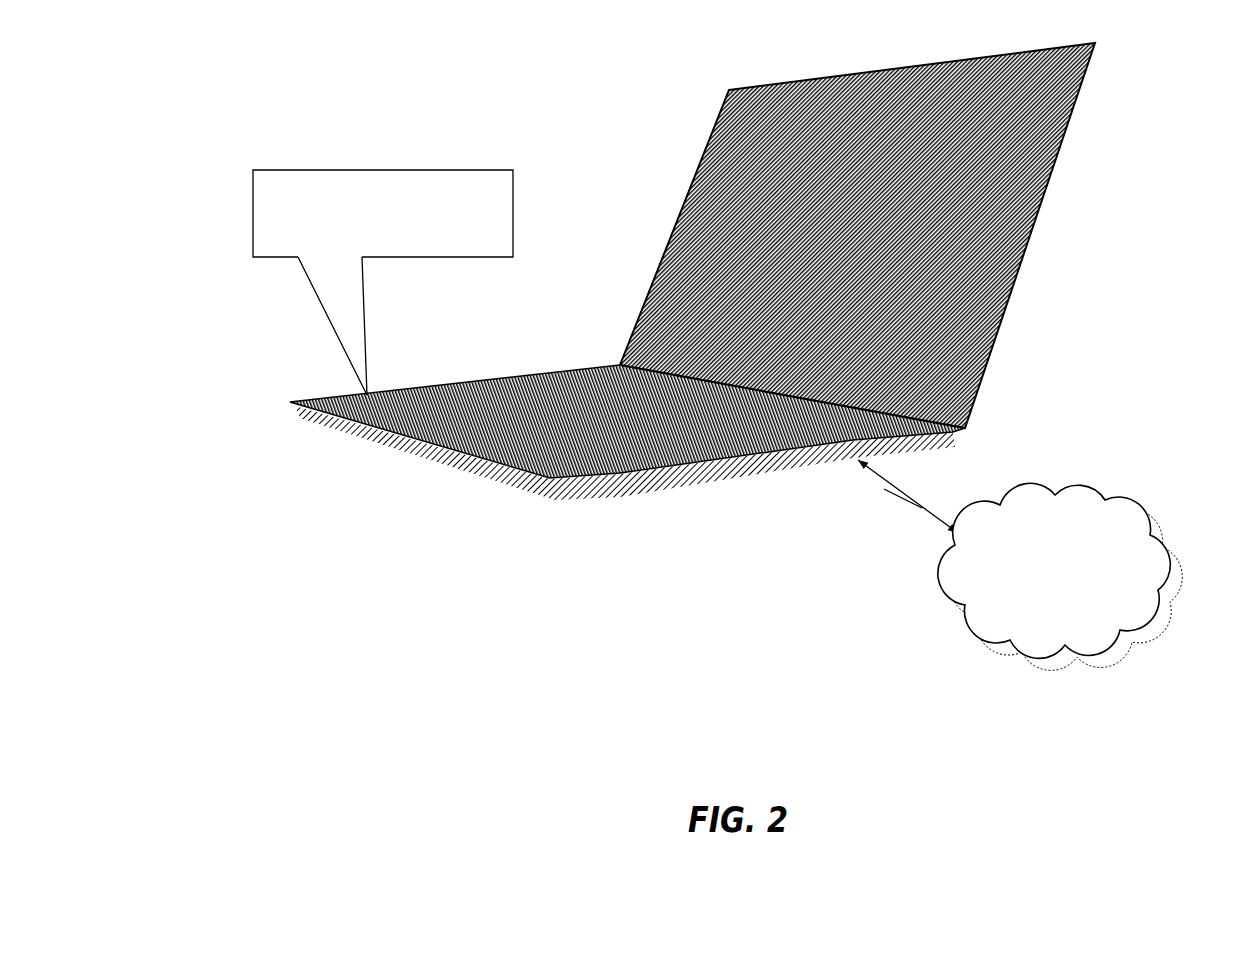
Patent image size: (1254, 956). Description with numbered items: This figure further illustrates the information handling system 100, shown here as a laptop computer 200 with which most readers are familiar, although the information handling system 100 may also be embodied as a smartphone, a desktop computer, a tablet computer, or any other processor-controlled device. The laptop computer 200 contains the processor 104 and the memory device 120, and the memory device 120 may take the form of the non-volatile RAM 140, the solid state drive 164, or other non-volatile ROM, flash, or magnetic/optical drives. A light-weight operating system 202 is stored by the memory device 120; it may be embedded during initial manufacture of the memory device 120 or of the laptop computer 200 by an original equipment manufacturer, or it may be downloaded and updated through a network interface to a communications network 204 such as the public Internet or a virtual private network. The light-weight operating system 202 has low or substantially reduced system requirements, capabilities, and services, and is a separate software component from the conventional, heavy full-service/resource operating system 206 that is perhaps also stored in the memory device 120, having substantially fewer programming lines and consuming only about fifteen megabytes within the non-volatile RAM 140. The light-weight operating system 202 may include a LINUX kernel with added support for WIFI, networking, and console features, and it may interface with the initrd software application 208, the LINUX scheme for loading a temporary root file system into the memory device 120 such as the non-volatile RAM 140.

The information handling system 100 is at (582, 468).
The processor 104 is at (582, 468).
The memory device 120 is at (627, 468).
The non-volatile RAM 140 is at (627, 468).
The solid state drive 164 is at (627, 468).
The laptop computer 200 is at (679, 307).
The light-weight operating system 202 is at (318, 191).
The communications network 204 is at (1160, 570).
The full-service/resource operating system 206 is at (280, 212).
The initrd software application 208 is at (360, 236).